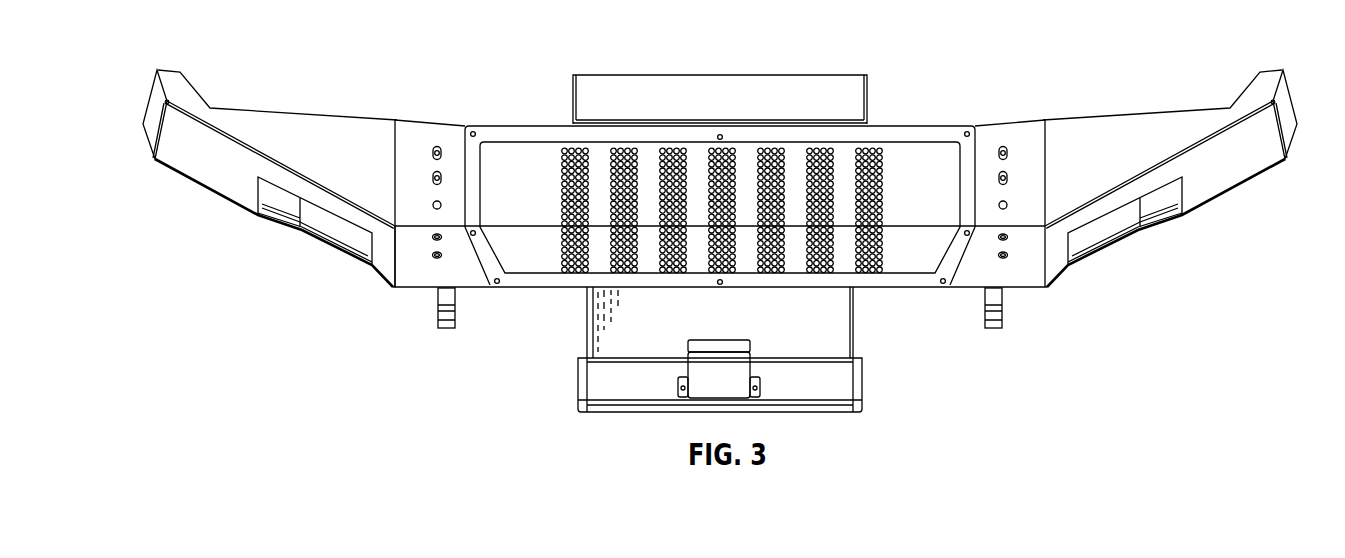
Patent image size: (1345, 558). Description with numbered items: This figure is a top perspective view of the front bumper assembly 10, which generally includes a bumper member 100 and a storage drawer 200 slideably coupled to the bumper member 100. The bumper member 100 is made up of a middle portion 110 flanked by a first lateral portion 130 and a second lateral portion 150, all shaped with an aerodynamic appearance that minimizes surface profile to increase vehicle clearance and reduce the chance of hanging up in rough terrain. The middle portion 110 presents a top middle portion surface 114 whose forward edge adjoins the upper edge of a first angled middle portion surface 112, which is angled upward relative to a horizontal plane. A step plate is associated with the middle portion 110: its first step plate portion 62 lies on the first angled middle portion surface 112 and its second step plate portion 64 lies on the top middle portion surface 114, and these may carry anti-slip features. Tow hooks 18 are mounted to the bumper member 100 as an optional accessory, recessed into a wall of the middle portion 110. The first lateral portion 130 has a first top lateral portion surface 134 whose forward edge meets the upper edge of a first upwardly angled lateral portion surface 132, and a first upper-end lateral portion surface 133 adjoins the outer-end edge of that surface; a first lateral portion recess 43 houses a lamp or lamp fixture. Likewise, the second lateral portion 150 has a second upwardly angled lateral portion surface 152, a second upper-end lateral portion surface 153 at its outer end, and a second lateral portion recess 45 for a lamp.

The bumper assembly 10 is at (298, 44).
The bumper member 100 is at (711, 194).
The middle portion 110 is at (953, 316).
The first angled middle portion surface 112 is at (472, 278).
The top middle portion surface 114 is at (420, 137).
The first lateral portion 130 is at (265, 171).
The first upwardly angled lateral portion surface 132 is at (243, 192).
The first upper-end lateral portion surface 133 is at (153, 92).
The first top lateral portion surface 134 is at (235, 117).
The second lateral portion 150 is at (1176, 170).
The second upwardly angled lateral portion surface 152 is at (1190, 192).
The second upper-end lateral portion surface 153 is at (1287, 90).
The first lateral portion recess 43 is at (345, 246).
The second lateral portion recess 45 is at (1097, 251).
The first step plate portion 62 is at (913, 263).
The second step plate portion 64 is at (925, 153).
The tow hooks 18 is at (453, 332).
The storage drawer 200 is at (560, 358).